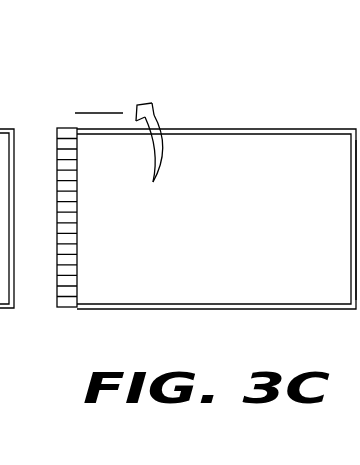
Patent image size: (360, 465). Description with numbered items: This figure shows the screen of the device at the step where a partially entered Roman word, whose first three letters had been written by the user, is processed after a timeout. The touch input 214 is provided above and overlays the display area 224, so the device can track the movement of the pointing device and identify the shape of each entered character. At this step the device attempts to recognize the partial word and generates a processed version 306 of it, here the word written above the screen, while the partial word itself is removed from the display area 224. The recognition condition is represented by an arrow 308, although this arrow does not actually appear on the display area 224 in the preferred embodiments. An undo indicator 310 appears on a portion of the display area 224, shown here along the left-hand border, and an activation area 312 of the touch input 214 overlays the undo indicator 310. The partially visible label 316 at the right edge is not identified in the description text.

The display screen 214 is at (216, 243).
The display area 224 is at (245, 311).
The car label 306 is at (102, 78).
The arrow indicator 308 is at (175, 103).
The scroll strip 310 is at (41, 240).
The scroll strip segments 312 is at (58, 293).
The right edge 316 is at (349, 248).